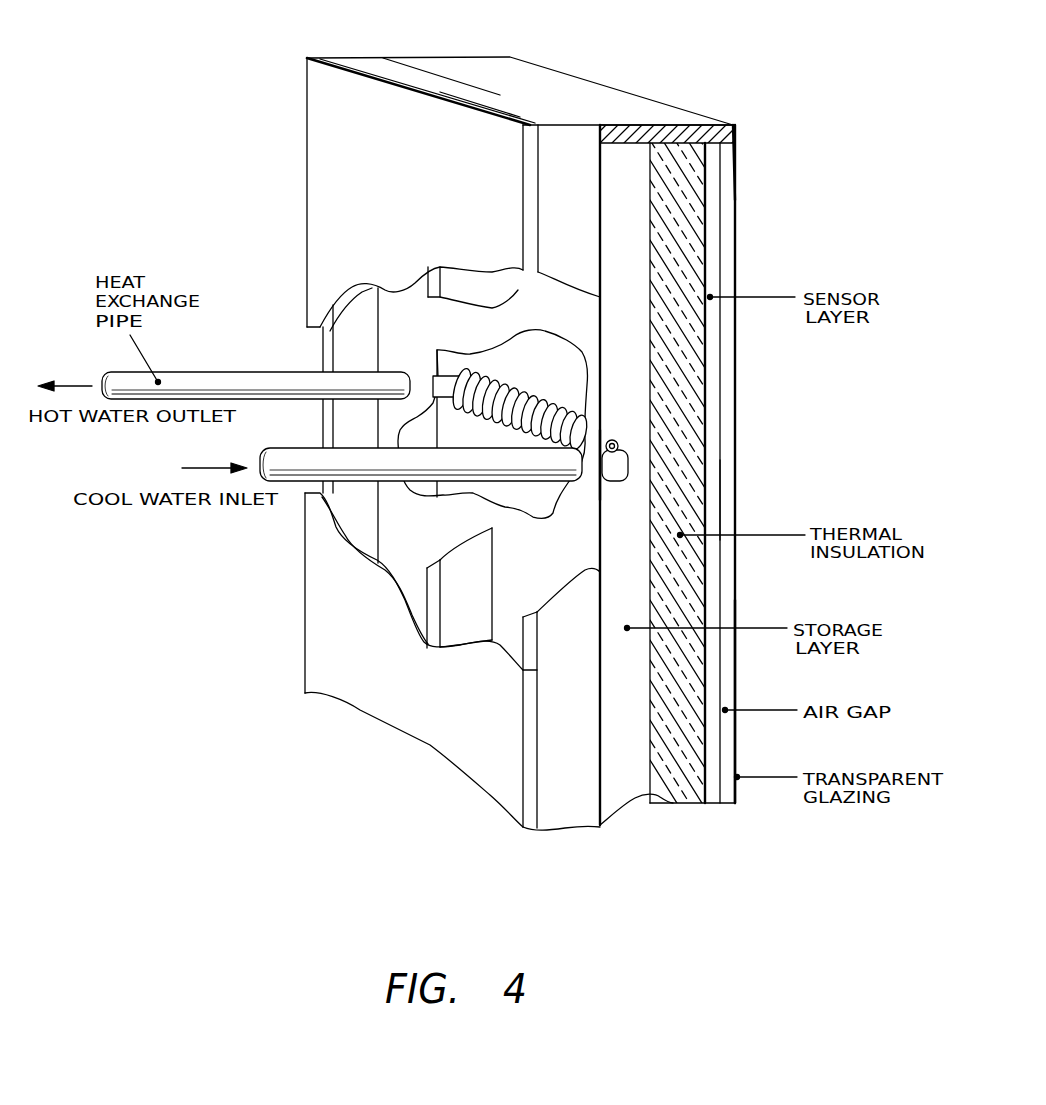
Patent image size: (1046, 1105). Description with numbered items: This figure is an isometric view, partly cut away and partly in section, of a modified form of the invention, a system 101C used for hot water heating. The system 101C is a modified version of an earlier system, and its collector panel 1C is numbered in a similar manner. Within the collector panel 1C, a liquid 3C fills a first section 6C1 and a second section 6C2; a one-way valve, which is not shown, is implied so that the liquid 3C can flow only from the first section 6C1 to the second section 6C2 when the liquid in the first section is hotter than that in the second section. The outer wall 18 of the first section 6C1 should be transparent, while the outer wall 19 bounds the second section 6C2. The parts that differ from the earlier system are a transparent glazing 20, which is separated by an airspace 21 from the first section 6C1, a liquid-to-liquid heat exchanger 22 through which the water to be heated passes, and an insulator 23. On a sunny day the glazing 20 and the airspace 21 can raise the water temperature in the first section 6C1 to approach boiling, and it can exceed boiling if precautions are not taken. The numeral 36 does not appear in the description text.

The collector panel 1C is at (706, 108).
The system 101C is at (797, 184).
The outer wall of second section 19 is at (603, 157).
The outer wall of first section 18 is at (722, 178).
The airspace 21 is at (727, 258).
The transparent glazing 20 is at (737, 358).
The sensor layer surface 36 is at (710, 412).
The insulator 23 is at (566, 166).
The liquid-to-liquid heat exchanger 22 is at (540, 394).
The first section 6C1 is at (710, 500).
The second section 6C2 is at (615, 792).
The liquid 3C is at (638, 783).